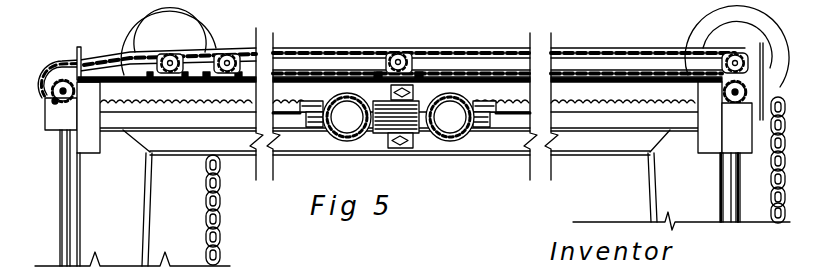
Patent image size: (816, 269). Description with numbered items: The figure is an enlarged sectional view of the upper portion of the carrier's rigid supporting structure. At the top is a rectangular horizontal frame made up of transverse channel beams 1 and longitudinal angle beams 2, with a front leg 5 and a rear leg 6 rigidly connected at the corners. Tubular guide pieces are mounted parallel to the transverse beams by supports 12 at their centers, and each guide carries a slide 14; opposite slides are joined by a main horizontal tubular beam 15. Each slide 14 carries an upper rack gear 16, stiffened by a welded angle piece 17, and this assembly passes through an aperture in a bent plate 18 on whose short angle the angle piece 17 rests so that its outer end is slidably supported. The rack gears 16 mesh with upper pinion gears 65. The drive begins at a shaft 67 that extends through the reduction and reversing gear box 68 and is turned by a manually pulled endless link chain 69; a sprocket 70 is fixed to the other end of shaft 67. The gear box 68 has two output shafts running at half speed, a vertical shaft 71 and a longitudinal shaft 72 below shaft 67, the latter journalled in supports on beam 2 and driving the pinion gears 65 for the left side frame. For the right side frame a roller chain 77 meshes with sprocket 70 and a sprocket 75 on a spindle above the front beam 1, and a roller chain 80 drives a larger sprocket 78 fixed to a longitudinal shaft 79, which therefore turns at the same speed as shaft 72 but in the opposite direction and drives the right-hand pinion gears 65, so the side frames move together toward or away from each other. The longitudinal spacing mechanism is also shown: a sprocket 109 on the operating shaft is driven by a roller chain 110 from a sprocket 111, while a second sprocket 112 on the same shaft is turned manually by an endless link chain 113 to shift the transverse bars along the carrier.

The transverse channel beam 1 is at (465, 157).
The longitudinal angle beam 2 is at (78, 58).
The front leg 5 is at (648, 201).
The rear leg 6 is at (130, 230).
The support 12 is at (396, 148).
The slide 14 is at (365, 135).
The main horizontal tubular beam 15 is at (463, 138).
The upper rack gear 16 is at (155, 101).
The angle piece 17 is at (182, 125).
The bent plate 18 is at (88, 142).
The upper pinion gear 65 is at (55, 101).
The shaft 67 is at (732, 57).
The reduction and reversing gear box 68 is at (748, 60).
The endless link chain 69 is at (765, 160).
The sprocket 70 is at (716, 54).
The vertical shaft 71 is at (736, 210).
The longitudinal shaft 72 is at (741, 80).
The sprocket 75 is at (229, 58).
The roller chain 77 is at (466, 52).
The sprocket 78 is at (53, 76).
The longitudinal shaft 79 is at (60, 91).
The roller chain 80 is at (93, 57).
The sprocket 109 is at (394, 58).
The roller chain 110 is at (291, 52).
The sprocket 111 is at (178, 56).
The sprocket 112 is at (150, 24).
The endless link chain 113 is at (222, 245).